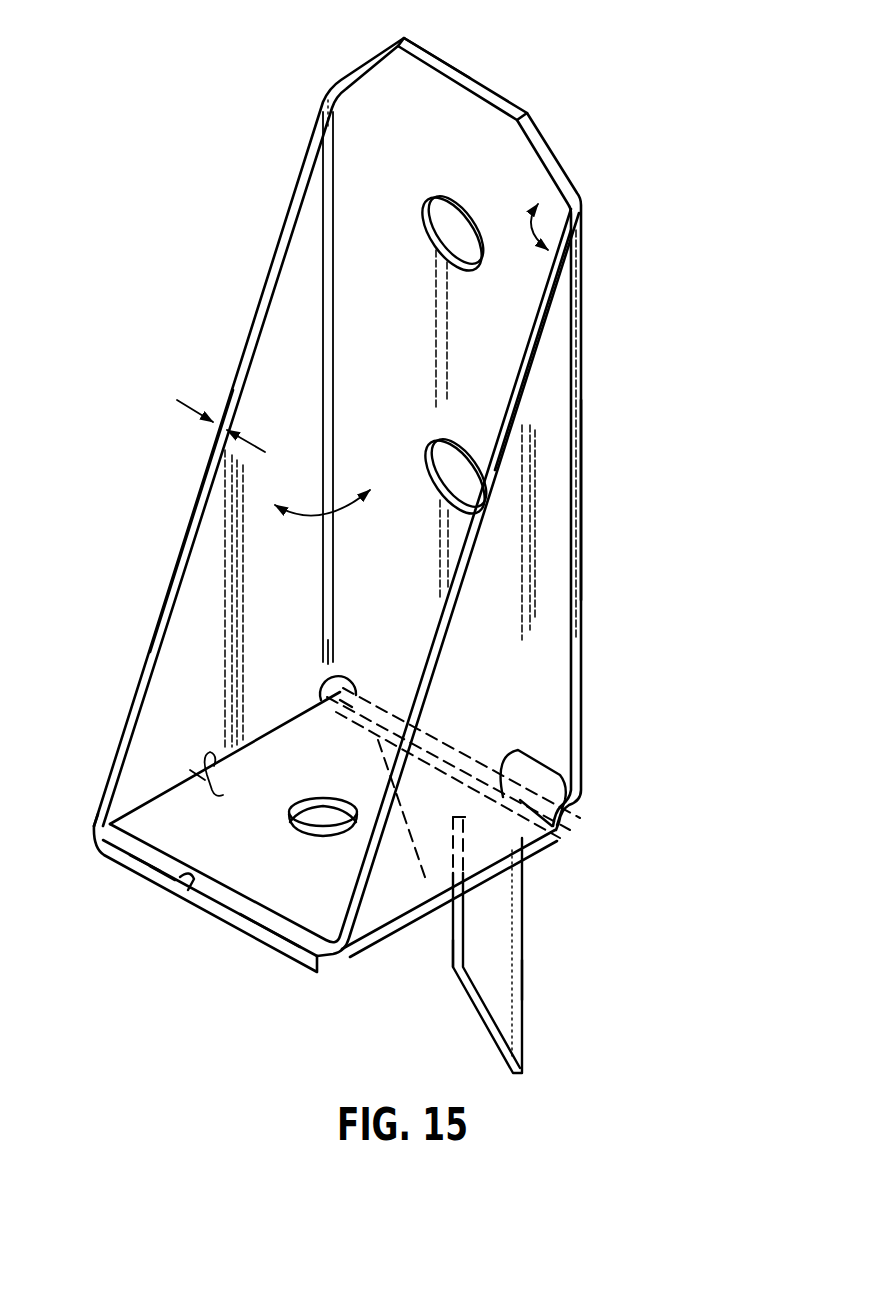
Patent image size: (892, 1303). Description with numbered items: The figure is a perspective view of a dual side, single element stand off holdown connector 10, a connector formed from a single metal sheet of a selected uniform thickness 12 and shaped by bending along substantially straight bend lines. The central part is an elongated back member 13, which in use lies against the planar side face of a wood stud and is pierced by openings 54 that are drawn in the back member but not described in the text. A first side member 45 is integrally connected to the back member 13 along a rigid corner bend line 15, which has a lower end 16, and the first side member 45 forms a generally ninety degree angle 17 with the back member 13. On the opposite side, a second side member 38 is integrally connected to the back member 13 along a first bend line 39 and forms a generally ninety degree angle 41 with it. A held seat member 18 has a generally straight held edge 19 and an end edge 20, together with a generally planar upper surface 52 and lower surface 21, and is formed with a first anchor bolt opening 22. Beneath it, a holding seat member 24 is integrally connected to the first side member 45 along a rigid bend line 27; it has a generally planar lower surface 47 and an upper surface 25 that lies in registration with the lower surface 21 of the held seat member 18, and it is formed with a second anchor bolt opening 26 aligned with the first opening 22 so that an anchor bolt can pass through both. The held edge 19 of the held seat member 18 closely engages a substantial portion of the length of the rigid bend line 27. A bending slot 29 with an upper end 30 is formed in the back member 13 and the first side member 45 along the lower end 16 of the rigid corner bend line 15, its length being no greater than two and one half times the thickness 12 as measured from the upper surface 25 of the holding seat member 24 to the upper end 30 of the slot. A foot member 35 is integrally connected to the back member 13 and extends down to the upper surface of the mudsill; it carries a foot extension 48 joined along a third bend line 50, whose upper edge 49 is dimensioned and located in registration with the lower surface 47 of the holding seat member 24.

The dual side, single element stand off holdown connector 10 is at (606, 305).
The thickness 12 is at (178, 400).
The elongated back member 13 is at (391, 384).
The rigid corner bend line 15 is at (333, 318).
The lower end 16 is at (343, 662).
The angle 17 is at (362, 508).
The held seat member 18 is at (195, 796).
The held edge 19 is at (239, 778).
The end edge 20 is at (250, 905).
The lower surface 21 is at (268, 938).
The first anchor bolt opening 22 is at (303, 806).
The holding seat member 24 is at (172, 887).
The upper surface 25 is at (188, 892).
The second anchor bolt opening 26 is at (332, 812).
The rigid bend line 27 is at (100, 832).
The bending slot 29 is at (352, 696).
The upper end 30 is at (333, 672).
The foot member 35 is at (525, 915).
The second side member 38 is at (500, 664).
The first bend line 39 is at (584, 530).
The angle 41 is at (530, 234).
The first side member 45 is at (242, 342).
The lower surface 47 is at (140, 876).
The foot extension 48 is at (457, 927).
The upper edge 49 is at (455, 818).
The third bend line 50 is at (523, 996).
The upper surface 52 is at (252, 862).
The mounting holes 54 is at (432, 205).